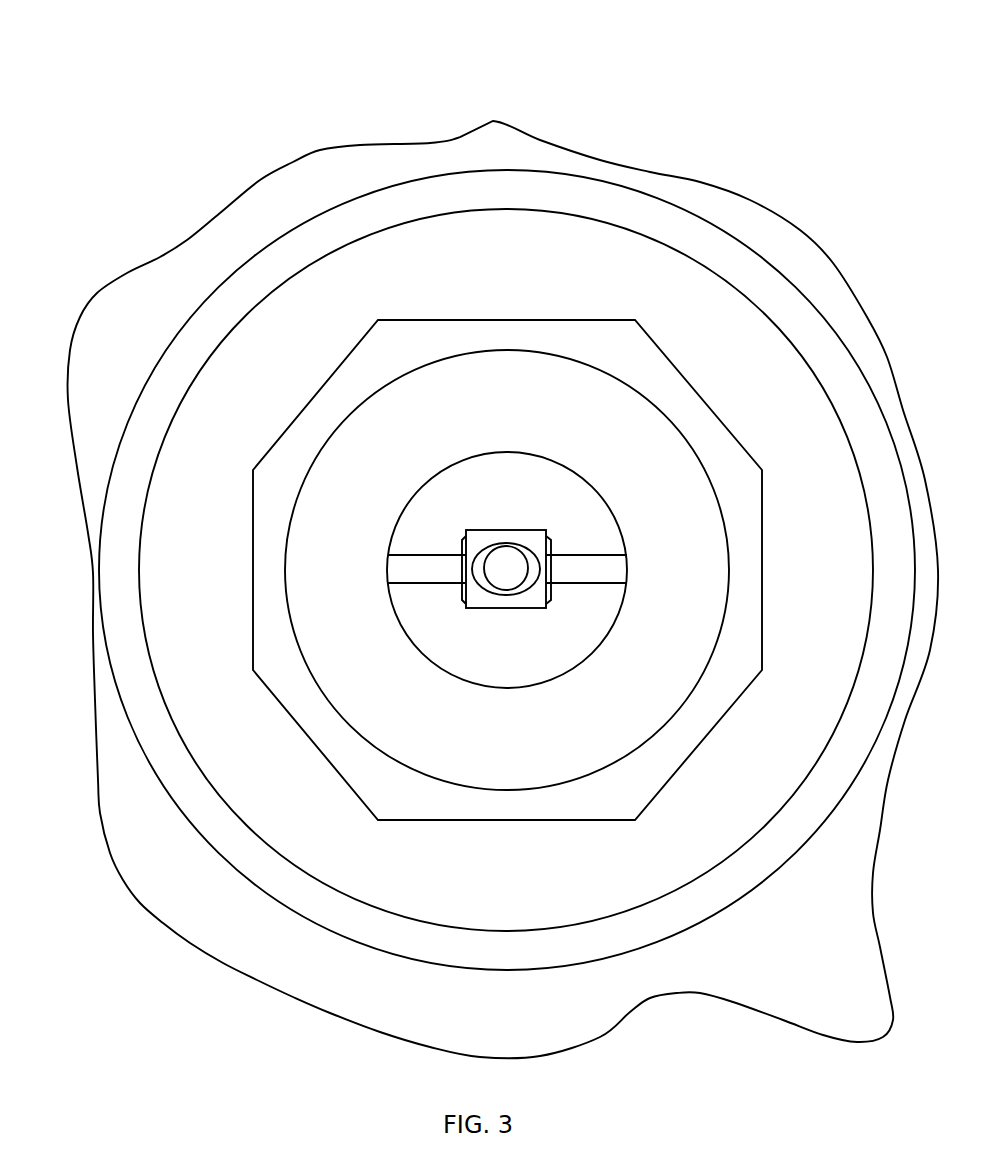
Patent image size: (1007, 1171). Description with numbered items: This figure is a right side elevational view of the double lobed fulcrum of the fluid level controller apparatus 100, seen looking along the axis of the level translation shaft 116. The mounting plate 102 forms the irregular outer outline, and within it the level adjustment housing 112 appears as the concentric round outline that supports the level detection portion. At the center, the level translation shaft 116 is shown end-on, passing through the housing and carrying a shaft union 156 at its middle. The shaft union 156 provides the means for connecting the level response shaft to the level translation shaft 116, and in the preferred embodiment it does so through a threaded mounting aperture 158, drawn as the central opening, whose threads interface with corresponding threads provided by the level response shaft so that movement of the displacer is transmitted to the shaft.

The fluid level controller apparatus 100 is at (417, 78).
The mounting plate 102 is at (848, 920).
The level adjustment housing 112 is at (503, 228).
The level translation shaft 116 is at (445, 562).
The shaft union 156 is at (505, 607).
The threaded mounting aperture 158 is at (497, 557).